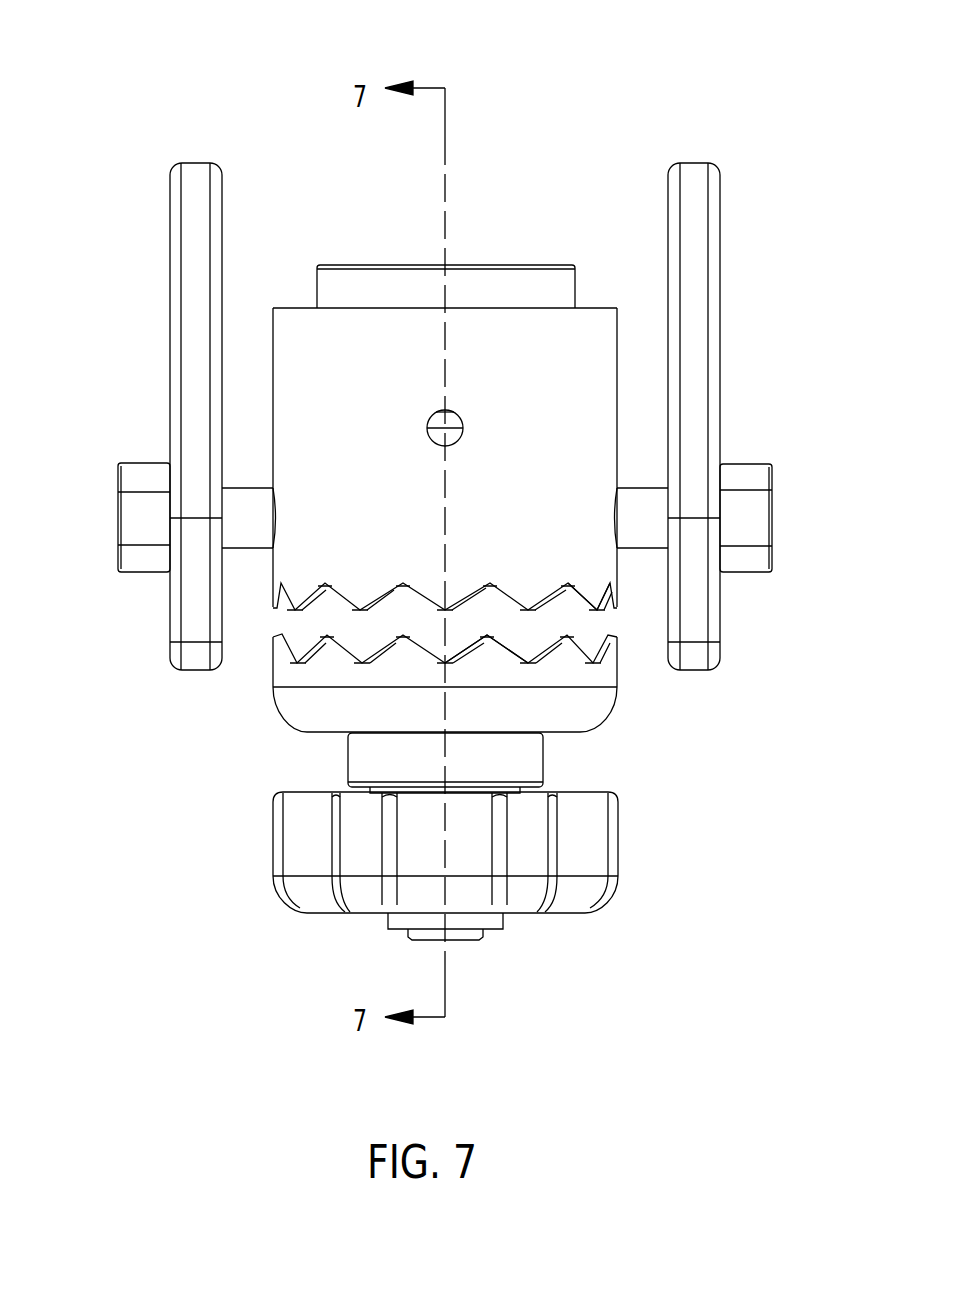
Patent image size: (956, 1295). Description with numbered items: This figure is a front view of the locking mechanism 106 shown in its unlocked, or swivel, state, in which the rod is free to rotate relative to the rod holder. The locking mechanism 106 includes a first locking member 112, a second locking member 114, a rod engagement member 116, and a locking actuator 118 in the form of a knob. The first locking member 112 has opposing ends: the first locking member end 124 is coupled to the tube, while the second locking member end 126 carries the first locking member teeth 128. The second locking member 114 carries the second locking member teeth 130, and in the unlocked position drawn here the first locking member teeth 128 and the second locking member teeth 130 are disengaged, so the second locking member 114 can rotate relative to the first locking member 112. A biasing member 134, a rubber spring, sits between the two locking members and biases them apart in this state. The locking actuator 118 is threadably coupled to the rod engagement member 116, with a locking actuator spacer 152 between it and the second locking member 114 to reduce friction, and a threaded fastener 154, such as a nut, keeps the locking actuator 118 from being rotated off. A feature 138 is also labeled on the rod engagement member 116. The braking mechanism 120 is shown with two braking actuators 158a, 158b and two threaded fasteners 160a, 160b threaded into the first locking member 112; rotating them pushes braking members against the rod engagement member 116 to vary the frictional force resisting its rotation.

The locking mechanism 106 is at (212, 88).
The braking mechanism 120 is at (112, 253).
The first locking member 112 is at (590, 352).
The second locking member 114 is at (318, 712).
The rod engagement member 116 is at (480, 265).
The locking actuator 118 is at (598, 857).
The first locking member end 124 is at (590, 308).
The second locking member end 126 is at (592, 597).
The first locking member teeth 128 is at (358, 598).
The second locking member teeth 130 is at (315, 655).
The biasing member 134 is at (458, 650).
The cap flange 138 is at (405, 277).
The locking actuator spacer 152 is at (540, 770).
The threaded fastener 154 is at (478, 915).
The braking actuator 158a is at (697, 207).
The braking actuator 158b is at (195, 368).
The threaded fastener 160a is at (740, 507).
The threaded fastener 160b is at (138, 505).